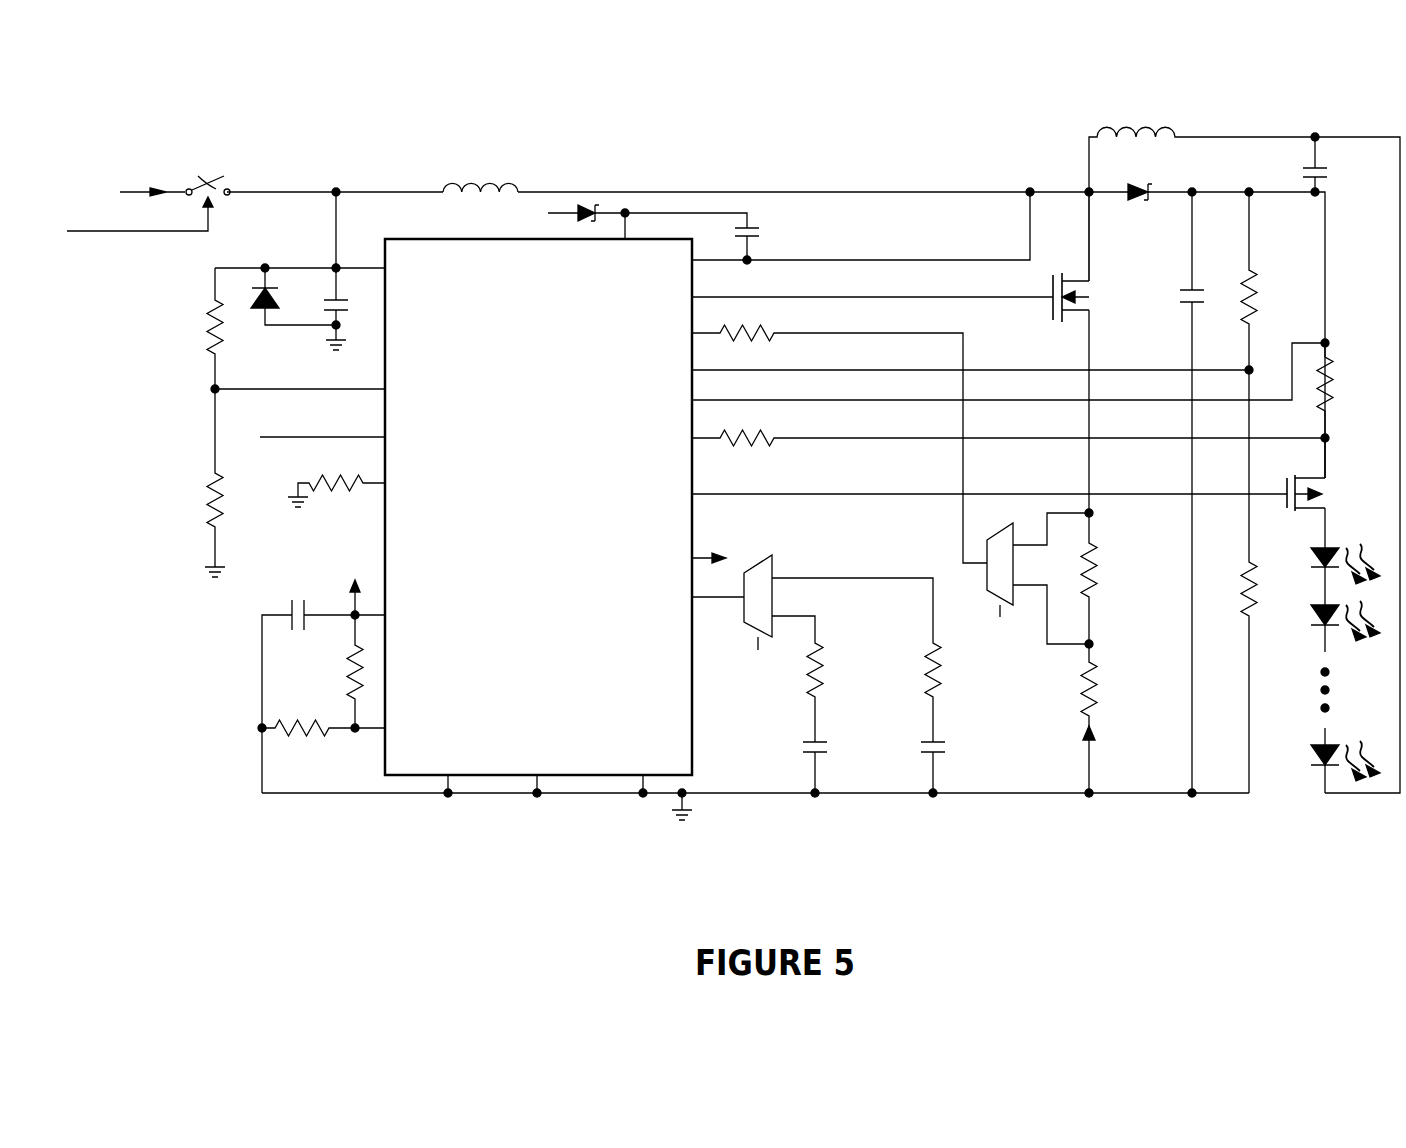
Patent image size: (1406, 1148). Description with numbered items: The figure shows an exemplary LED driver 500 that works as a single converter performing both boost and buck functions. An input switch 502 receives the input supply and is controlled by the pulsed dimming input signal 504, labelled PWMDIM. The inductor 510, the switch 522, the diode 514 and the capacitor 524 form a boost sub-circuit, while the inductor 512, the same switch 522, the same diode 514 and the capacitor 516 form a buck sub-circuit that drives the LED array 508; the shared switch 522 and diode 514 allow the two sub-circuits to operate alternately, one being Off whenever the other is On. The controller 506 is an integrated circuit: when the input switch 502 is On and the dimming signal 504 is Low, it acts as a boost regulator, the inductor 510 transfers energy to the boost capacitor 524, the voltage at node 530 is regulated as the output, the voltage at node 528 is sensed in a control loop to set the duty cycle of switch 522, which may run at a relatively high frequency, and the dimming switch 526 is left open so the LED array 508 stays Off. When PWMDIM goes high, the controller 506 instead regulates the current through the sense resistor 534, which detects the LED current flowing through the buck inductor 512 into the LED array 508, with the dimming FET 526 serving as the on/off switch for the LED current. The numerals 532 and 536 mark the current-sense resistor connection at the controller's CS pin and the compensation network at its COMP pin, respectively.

The LED driver 500 is at (742, 83).
The input switch 502 is at (218, 170).
The pulsed dimming input signal 504 is at (100, 243).
The controller 506 is at (520, 515).
The LED array 508 is at (1318, 772).
The inductor 510 is at (497, 175).
The inductor 512 is at (1147, 125).
The diode 514 is at (1150, 186).
The capacitor 516 is at (1335, 178).
The switch 522 is at (1048, 297).
The capacitor 524 is at (1185, 305).
The switch 526 is at (1292, 520).
The node 528 is at (1097, 513).
The node 530 is at (1197, 200).
The current sense resistor RSC 532 is at (655, 333).
The sense resistor 534 is at (1336, 356).
The compensation network 536 is at (632, 597).